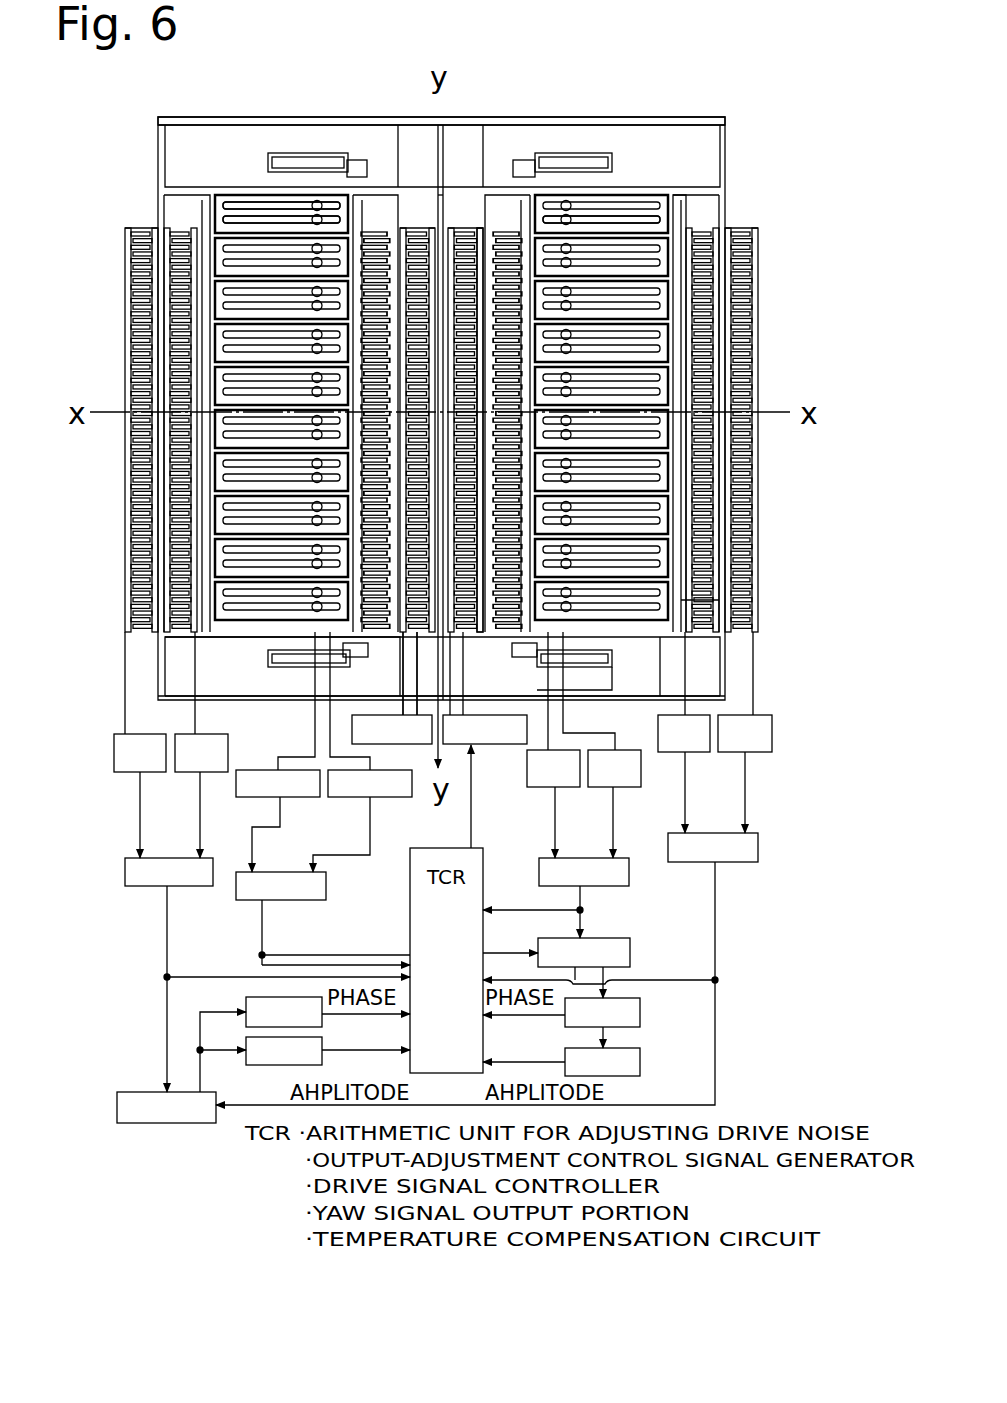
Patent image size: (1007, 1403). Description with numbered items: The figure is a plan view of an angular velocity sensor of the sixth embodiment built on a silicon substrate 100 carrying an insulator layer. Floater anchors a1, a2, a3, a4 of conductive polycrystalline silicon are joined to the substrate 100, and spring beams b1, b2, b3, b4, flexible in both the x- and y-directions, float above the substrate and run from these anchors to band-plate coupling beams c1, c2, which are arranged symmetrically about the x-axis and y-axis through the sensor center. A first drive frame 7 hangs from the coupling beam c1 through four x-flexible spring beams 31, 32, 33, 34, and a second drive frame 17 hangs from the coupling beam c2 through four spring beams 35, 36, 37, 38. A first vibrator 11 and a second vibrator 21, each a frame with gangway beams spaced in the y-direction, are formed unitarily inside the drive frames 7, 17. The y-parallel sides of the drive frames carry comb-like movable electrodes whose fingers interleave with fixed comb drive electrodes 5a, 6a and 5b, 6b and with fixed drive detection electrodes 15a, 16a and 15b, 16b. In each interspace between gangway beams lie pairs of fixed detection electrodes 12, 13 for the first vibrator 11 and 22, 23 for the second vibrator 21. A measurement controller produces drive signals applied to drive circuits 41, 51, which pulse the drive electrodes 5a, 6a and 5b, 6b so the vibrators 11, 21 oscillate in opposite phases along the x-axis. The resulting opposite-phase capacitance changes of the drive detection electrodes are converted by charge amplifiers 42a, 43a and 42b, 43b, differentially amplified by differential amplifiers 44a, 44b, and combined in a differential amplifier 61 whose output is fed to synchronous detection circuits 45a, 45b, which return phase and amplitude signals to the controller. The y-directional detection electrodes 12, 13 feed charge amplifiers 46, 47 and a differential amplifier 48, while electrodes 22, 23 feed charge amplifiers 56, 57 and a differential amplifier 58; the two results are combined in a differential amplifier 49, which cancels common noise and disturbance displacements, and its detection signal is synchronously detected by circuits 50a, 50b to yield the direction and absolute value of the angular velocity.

The first vibrator 11 is at (690, 200).
The fixed detection electrode 12 is at (640, 207).
The fixed detection electrode 13 is at (614, 215).
The drive detection electrode 15a is at (740, 232).
The drive detection electrode 15b is at (128, 232).
The drive detection electrode 16a is at (690, 235).
The drive detection electrode 16b is at (195, 235).
The second drive frame 17 is at (435, 228).
The second vibrator 21 is at (210, 200).
The fixed detection electrode 22 is at (237, 206).
The fixed detection electrode 23 is at (262, 222).
The spring beam 31 is at (478, 232).
The spring beam 32 is at (725, 150).
The spring beam 33 is at (700, 612).
The spring beam 34 is at (660, 695).
The spring beam 35 is at (418, 228).
The spring beam 36 is at (160, 165).
The spring beam 37 is at (400, 640).
The spring beam 38 is at (300, 658).
The drive circuit 41 is at (500, 745).
The charge amplifier 42a is at (705, 752).
The charge amplifier 42b is at (160, 755).
The charge amplifier 43a is at (740, 752).
The charge amplifier 43b is at (188, 768).
The differential amplifier 44a is at (758, 850).
The differential amplifier 44b is at (137, 885).
The synchronous detection circuit 45a is at (246, 1000).
The synchronous detection circuit 45b is at (246, 1042).
The charge amplifier 46 is at (630, 788).
The charge amplifier 47 is at (535, 788).
The differential amplifier 48 is at (630, 880).
The differential amplifier 49 is at (630, 952).
The synchronous detection circuit 50a is at (640, 1013).
The synchronous detection circuit 50b is at (640, 1062).
The drive circuit 51 is at (400, 746).
The charge amplifier 56 is at (298, 798).
The charge amplifier 57 is at (350, 798).
The differential amplifier 58 is at (300, 900).
The differential amplifier 61 is at (117, 1105).
The silicon substrate 100 is at (240, 660).
The drive electrode 5a is at (520, 230).
The drive electrode 5b is at (385, 232).
The drive electrode 6a is at (458, 232).
The drive electrode 6b is at (428, 232).
The first drive frame 7 is at (445, 195).
The floater anchor a1 is at (560, 153).
The floater anchor a2 is at (357, 160).
The floater anchor a3 is at (575, 660).
The floater anchor a4 is at (205, 658).
The spring beam b1 is at (527, 165).
The spring beam b2 is at (318, 153).
The spring beam b3 is at (530, 650).
The spring beam b4 is at (343, 650).
The coupling beam c1 is at (660, 200).
The coupling beam c2 is at (612, 680).